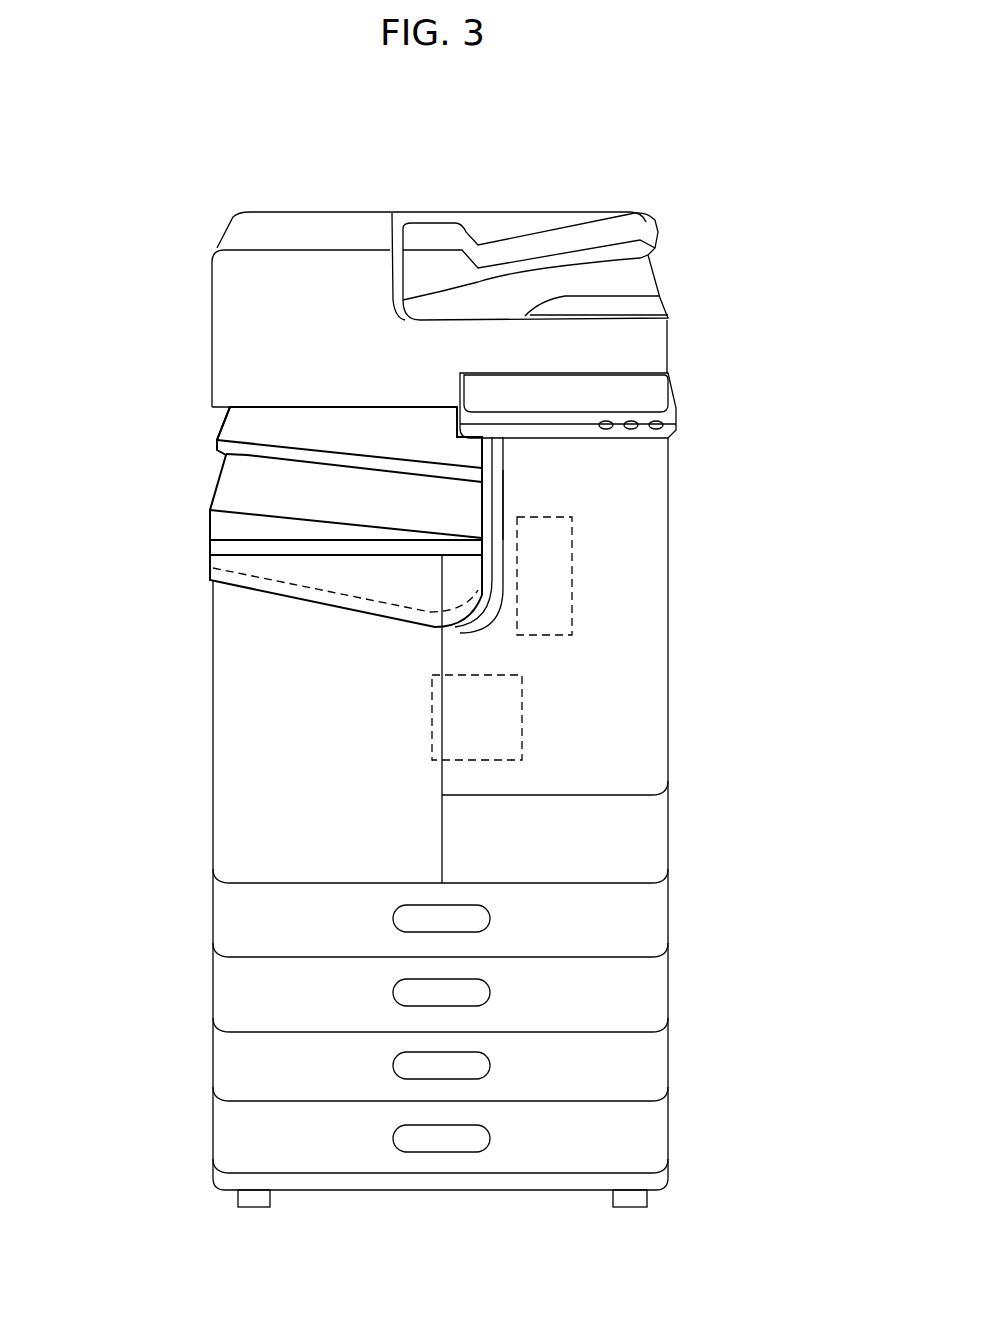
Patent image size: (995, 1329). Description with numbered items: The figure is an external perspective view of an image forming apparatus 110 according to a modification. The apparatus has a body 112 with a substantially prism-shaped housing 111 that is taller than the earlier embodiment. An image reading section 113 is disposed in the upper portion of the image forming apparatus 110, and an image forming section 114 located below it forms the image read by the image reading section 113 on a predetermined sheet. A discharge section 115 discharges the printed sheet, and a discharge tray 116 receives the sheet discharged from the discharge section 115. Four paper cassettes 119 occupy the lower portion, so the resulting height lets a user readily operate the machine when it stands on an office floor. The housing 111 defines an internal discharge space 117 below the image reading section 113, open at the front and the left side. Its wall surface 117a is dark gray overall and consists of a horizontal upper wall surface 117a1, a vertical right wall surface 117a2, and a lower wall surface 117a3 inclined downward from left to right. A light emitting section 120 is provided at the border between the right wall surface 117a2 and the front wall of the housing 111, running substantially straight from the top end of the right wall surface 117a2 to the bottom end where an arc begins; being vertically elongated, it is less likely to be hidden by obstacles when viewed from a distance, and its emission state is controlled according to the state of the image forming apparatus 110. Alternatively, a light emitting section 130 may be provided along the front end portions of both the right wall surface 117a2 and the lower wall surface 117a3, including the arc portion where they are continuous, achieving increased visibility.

The image forming apparatus 110 is at (552, 154).
The housing 111 is at (669, 686).
The body 112 is at (688, 488).
The image reading section 113 is at (688, 225).
The image forming section 114 is at (522, 725).
The discharge section 115 is at (572, 622).
The discharge tray 116 is at (262, 500).
The internal discharge space 117 is at (185, 420).
The wall surface 117a is at (337, 148).
The horizontal upper wall surface 117a1 is at (337, 407).
The vertical right wall surface 117a2 is at (480, 500).
The lower wall surface 117a3 is at (297, 487).
The paper cassettes 119 is at (705, 873).
The light emitting section 120 is at (503, 502).
The light emitting section 130 is at (262, 597).